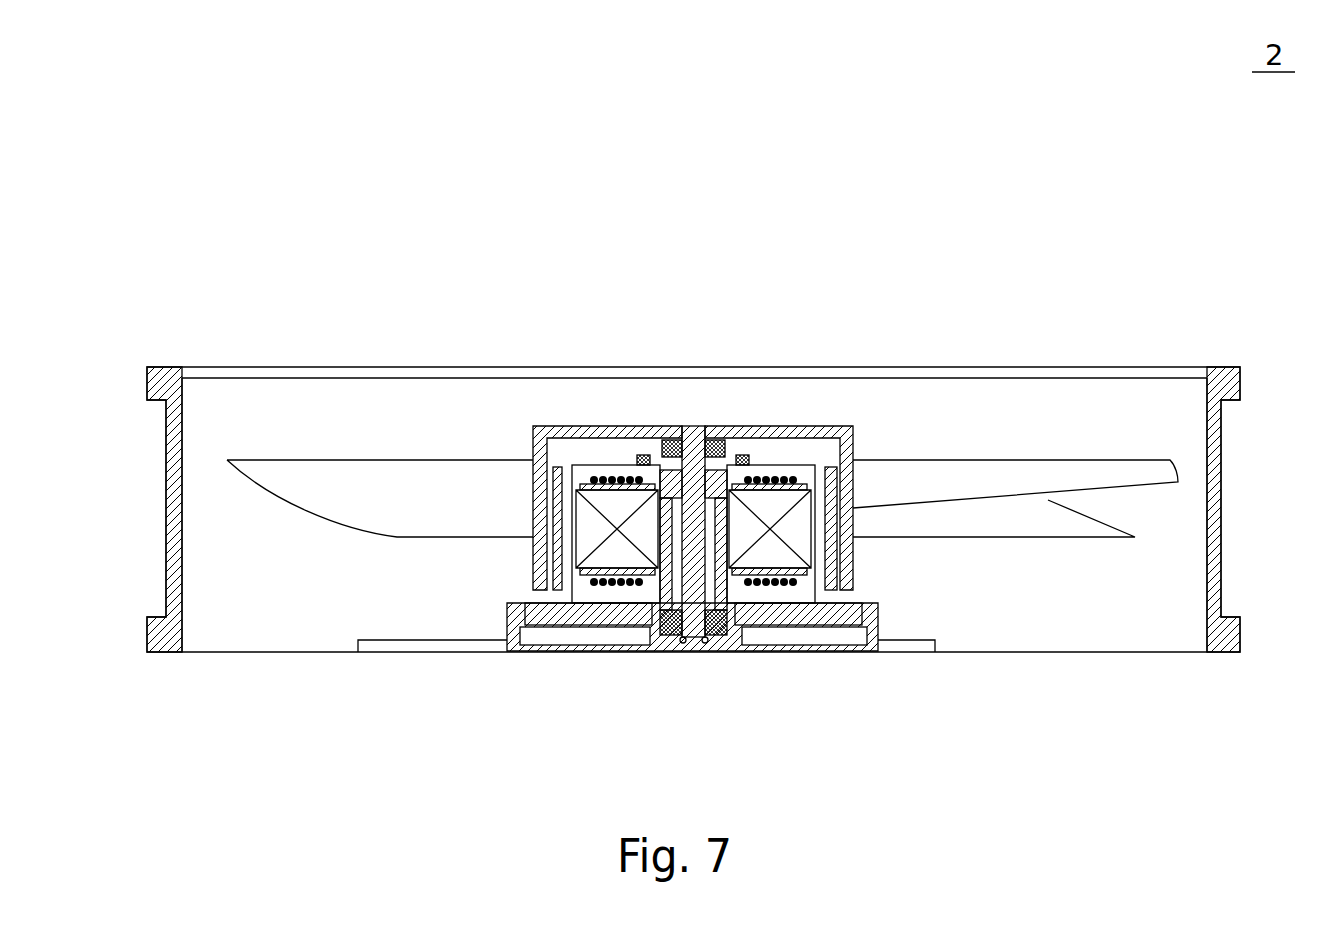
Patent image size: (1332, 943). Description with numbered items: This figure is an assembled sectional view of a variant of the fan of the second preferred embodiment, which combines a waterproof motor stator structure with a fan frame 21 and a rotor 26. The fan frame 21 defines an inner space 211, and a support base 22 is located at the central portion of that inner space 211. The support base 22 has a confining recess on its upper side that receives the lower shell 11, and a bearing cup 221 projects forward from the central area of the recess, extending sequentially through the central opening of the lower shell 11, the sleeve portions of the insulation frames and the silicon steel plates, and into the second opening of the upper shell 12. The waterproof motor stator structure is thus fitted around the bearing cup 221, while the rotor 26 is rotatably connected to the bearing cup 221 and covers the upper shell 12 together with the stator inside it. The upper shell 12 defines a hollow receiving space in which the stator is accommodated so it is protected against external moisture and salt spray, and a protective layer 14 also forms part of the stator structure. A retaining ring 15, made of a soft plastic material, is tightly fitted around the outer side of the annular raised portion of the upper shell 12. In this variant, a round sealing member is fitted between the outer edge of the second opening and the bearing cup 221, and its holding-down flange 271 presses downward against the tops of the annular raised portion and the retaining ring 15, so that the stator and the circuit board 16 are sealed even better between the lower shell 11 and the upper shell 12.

The fan frame 21 is at (1228, 642).
The inner space 211 is at (253, 412).
The support base 22 is at (540, 628).
The bearing cup 221 is at (645, 615).
The rotor 26 is at (690, 430).
The holding-down flange 271 is at (652, 430).
The lower shell 11 is at (560, 615).
The upper shell 12 is at (613, 458).
The protective layer 14 is at (532, 603).
The retaining ring 15 is at (641, 430).
The circuit board 16 is at (800, 627).